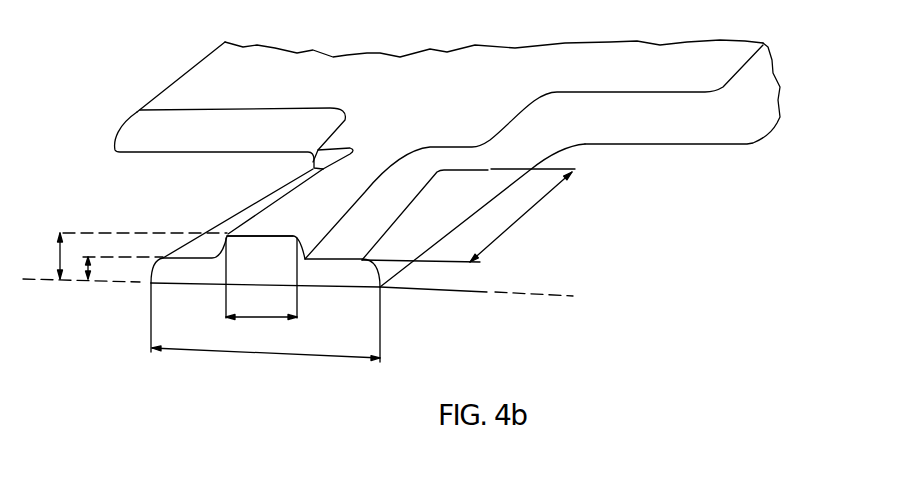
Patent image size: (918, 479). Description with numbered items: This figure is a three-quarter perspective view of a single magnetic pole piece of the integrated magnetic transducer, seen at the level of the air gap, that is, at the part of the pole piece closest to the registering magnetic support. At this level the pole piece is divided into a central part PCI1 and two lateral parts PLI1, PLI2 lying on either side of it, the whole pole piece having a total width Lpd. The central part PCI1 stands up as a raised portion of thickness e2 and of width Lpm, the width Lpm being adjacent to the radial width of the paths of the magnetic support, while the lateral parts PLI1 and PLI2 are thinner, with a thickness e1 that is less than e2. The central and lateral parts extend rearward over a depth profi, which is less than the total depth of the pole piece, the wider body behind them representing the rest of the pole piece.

The lateral part PLI1 is at (243, 213).
The central part PCI1 is at (286, 209).
The lateral part PLI2 is at (473, 215).
The depth profi is at (521, 217).
The thickness e2 is at (125, 257).
The thickness e1 is at (123, 271).
The width Lpm is at (261, 290).
The total width Lpd is at (265, 332).